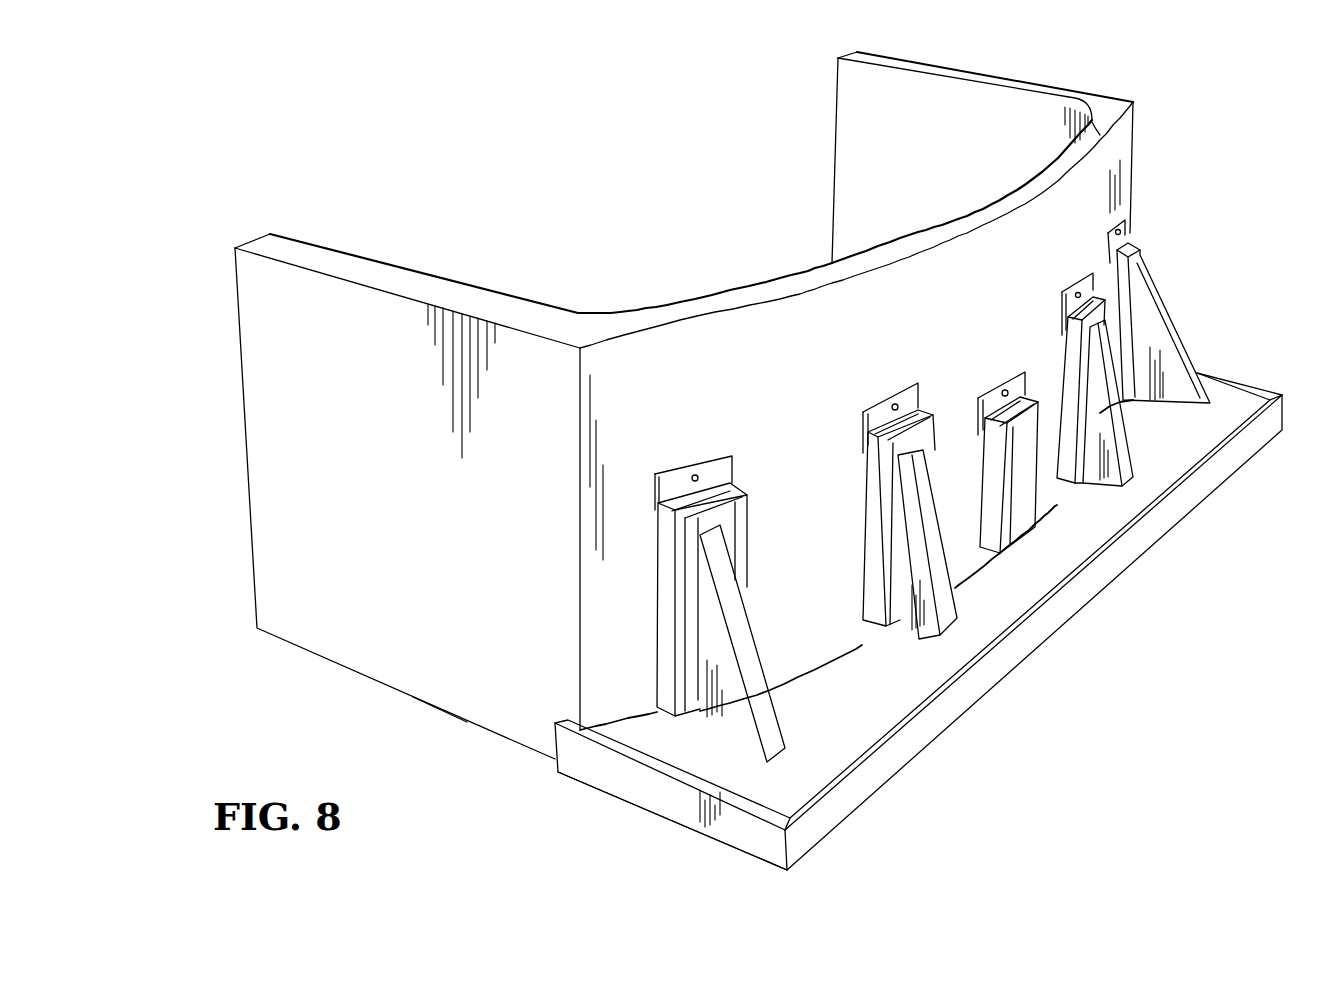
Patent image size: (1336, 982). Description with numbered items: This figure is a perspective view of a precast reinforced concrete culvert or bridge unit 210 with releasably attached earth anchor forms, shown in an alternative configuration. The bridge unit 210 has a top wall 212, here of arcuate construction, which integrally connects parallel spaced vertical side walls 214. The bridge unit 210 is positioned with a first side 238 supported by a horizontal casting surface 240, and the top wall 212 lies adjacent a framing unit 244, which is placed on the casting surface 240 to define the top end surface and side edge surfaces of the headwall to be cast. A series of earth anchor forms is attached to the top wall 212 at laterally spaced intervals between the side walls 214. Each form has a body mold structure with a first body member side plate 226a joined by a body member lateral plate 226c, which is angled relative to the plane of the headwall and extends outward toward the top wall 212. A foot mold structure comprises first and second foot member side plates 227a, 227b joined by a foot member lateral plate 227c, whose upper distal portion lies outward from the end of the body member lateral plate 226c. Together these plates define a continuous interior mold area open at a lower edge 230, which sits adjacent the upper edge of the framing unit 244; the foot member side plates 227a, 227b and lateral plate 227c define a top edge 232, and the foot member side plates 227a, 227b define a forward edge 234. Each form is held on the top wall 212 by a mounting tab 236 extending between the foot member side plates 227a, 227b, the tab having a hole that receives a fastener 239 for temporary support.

The bridge unit 210 is at (539, 293).
The top wall 212 is at (1100, 135).
The side walls 214 is at (273, 473).
The first body member side plate 226a is at (687, 574).
The body member lateral plate 226c is at (767, 718).
The first foot member side plate 227a is at (667, 530).
The second foot member side plate 227b is at (735, 485).
The foot member lateral plate 227c is at (700, 523).
The lower edge 230 is at (660, 542).
The top edge 232 is at (653, 483).
The forward edge 234 is at (660, 617).
The mounting tab 236 is at (713, 437).
The first side 238 is at (467, 722).
The fastener 239 is at (694, 474).
The casting surface 240 is at (815, 763).
The framing unit 244 is at (738, 822).